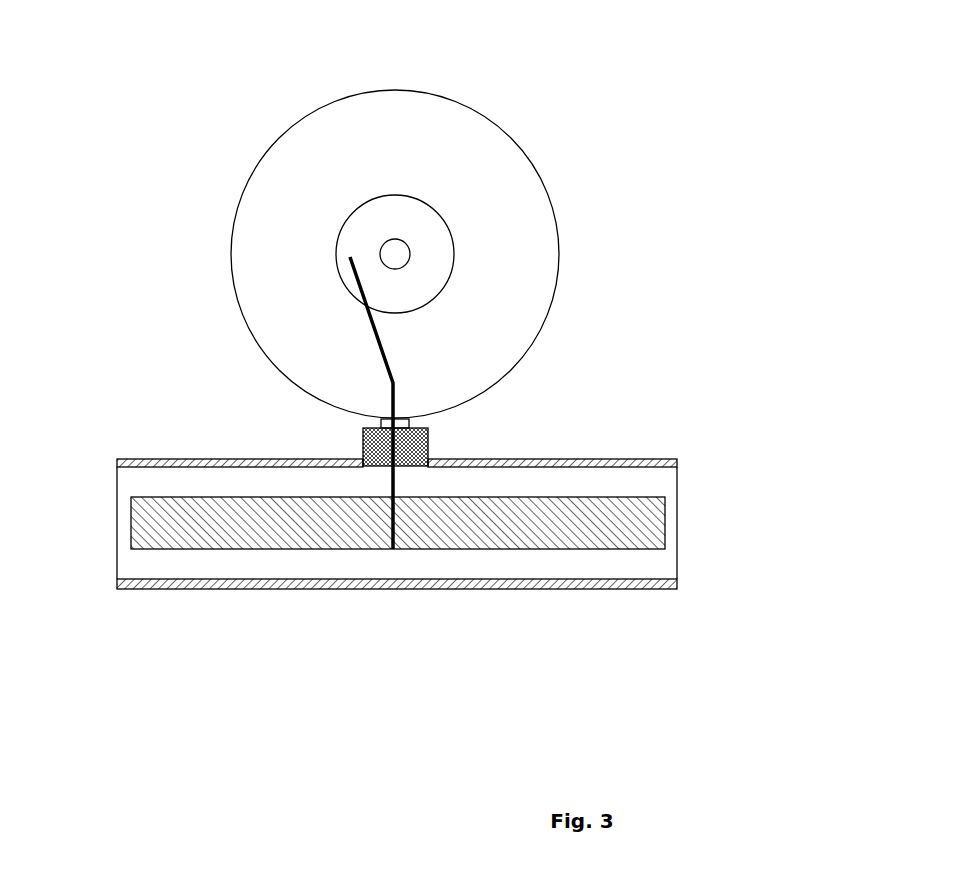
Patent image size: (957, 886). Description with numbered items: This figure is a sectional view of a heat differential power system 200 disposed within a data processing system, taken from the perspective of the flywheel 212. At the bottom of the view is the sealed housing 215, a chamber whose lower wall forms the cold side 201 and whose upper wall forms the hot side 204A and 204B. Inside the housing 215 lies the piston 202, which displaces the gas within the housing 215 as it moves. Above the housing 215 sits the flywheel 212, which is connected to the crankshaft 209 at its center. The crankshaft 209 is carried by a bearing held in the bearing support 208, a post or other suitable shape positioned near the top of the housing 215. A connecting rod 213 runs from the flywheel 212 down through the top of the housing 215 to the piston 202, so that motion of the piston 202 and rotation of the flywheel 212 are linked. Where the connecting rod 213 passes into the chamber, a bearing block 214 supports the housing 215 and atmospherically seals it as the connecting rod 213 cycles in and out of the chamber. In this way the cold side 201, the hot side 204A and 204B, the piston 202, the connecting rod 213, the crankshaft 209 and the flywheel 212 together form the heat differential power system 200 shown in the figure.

The heat differential power system 200 is at (717, 69).
The cold side 201 is at (232, 589).
The piston 202 is at (558, 549).
The hot side 204A is at (150, 458).
The hot side 204B is at (600, 457).
The bearing support 208 is at (409, 422).
The crankshaft 209 is at (396, 253).
The flywheel 212 is at (258, 167).
The connecting rod 213 is at (372, 327).
The bearing block 214 is at (363, 445).
The sealed housing 215 is at (677, 545).